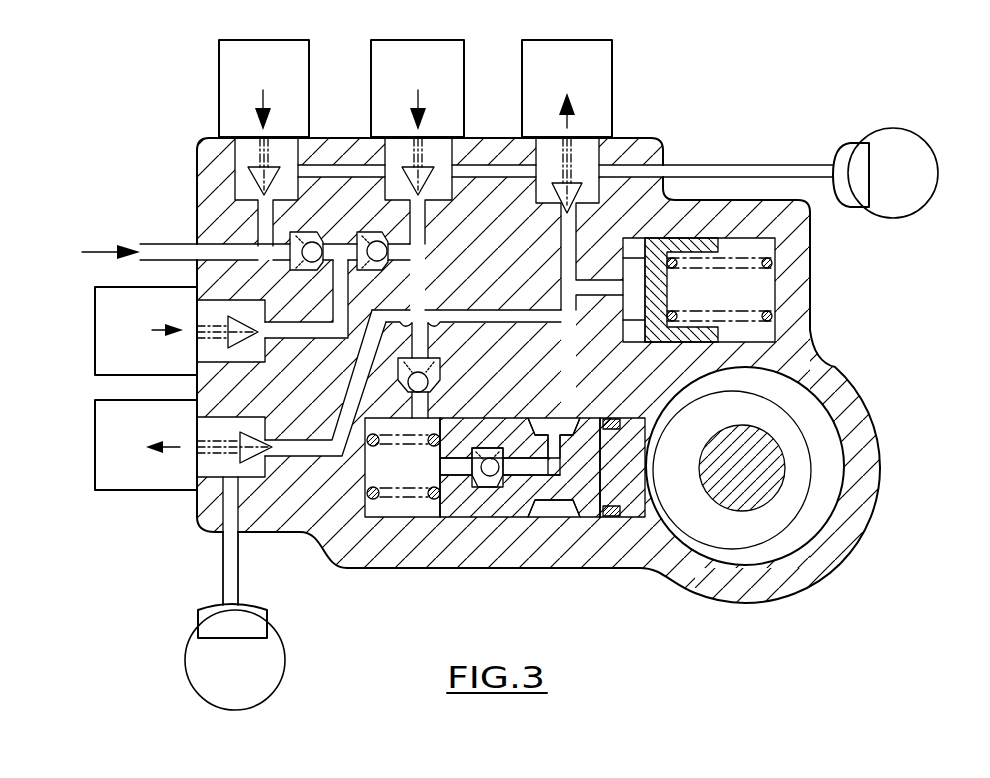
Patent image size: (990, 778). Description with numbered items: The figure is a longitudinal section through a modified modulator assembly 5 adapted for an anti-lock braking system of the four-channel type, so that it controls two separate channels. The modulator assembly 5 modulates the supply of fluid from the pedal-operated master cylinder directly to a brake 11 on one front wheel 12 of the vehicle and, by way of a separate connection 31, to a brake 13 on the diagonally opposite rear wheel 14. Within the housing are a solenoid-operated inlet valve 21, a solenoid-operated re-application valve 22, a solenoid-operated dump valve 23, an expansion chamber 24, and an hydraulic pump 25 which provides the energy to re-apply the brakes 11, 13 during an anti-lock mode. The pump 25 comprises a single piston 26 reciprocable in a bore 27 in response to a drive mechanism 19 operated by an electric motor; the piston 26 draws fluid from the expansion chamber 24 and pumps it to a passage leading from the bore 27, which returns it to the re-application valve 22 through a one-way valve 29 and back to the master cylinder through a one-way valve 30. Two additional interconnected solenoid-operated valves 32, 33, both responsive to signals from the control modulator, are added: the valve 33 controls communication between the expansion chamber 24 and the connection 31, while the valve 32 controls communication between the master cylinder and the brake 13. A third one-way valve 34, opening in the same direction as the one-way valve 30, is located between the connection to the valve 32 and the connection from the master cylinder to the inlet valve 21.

The modulator assembly 5 is at (346, 545).
The brake 11 is at (852, 193).
The front wheel 12 is at (915, 178).
The brake 13 is at (215, 620).
The rear wheel 14 is at (205, 670).
The drive mechanism 19 is at (735, 478).
The solenoid-operated inlet valve 21 is at (240, 96).
The solenoid-operated re-application valve 22 is at (393, 93).
The solenoid-operated dump valve 23 is at (545, 100).
The expansion chamber 24 is at (637, 325).
The hydraulic pump 25 is at (622, 492).
The piston 26 is at (512, 512).
The bore 27 is at (465, 520).
The one-way valve 29 is at (437, 388).
The one-way valve 30 is at (378, 262).
The connection 31 is at (232, 560).
The solenoid-operated valve 32 is at (100, 306).
The solenoid-operated valve 33 is at (100, 410).
The third one-way valve 34 is at (312, 262).